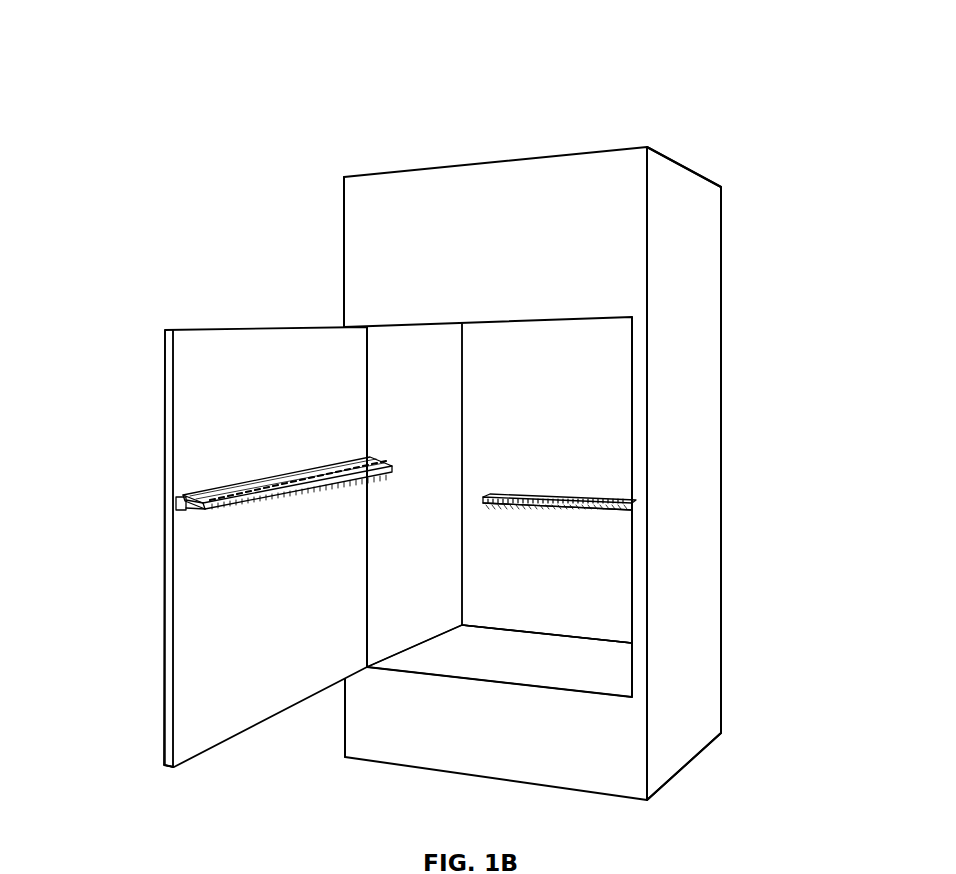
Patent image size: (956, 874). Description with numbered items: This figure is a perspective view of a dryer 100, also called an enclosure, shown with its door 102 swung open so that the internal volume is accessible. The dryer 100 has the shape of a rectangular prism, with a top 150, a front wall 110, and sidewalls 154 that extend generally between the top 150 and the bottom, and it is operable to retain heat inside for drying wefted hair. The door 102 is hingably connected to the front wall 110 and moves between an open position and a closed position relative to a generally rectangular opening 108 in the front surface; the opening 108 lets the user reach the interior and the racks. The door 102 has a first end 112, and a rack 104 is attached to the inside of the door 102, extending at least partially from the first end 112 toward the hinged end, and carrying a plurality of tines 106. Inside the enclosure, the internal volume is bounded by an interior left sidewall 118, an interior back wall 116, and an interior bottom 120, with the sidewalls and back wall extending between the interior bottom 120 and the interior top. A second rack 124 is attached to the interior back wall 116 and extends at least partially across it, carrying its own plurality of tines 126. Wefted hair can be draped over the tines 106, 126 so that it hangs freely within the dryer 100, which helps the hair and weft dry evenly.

The dryer 100 is at (328, 104).
The door 102 is at (210, 343).
The rack 104 is at (177, 503).
The tines 106 is at (210, 510).
The opening 108 is at (598, 318).
The front wall 110 is at (612, 168).
The first end 112 is at (168, 348).
The interior back wall 116 is at (568, 406).
The interior left sidewall 118 is at (431, 397).
The interior bottom 120 is at (575, 672).
The rack 124 is at (610, 500).
The tines 126 is at (583, 507).
The top 150 is at (515, 157).
The sidewalls 154 is at (695, 187).